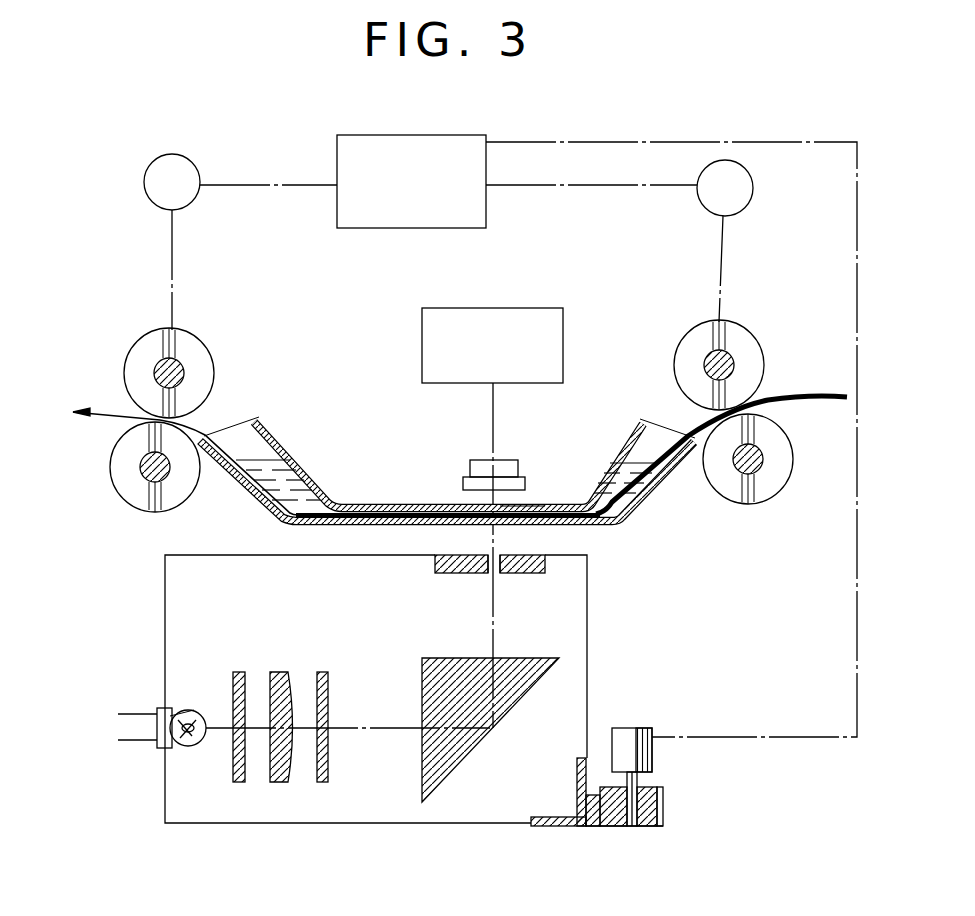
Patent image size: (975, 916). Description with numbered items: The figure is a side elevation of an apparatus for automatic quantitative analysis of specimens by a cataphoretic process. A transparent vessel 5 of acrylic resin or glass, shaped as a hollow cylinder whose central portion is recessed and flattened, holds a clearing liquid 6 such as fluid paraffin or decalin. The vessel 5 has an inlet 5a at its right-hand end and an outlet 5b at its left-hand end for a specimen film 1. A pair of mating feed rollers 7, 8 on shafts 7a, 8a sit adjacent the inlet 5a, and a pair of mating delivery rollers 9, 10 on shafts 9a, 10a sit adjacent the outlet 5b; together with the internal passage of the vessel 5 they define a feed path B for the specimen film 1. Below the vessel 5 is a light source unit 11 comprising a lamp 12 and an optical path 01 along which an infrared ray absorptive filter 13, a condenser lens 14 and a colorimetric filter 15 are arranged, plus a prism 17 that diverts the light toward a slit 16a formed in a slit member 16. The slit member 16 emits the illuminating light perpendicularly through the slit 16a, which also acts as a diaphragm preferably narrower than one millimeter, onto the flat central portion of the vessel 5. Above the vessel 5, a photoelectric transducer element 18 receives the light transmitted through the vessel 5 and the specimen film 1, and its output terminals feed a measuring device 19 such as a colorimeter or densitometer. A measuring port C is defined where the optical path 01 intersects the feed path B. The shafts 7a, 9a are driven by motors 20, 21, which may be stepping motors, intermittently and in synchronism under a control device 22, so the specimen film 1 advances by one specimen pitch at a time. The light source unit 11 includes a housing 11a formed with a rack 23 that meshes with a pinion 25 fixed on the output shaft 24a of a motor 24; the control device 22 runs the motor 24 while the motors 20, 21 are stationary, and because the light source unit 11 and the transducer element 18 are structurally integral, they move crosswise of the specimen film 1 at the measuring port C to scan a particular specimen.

The specimen film 1 is at (778, 392).
The transparent vessel 5 is at (612, 527).
The inlet 5a is at (655, 432).
The outlet 5b is at (236, 460).
The clearing liquid 6 is at (625, 505).
The feed roller 7 is at (750, 342).
The shaft 7a is at (705, 360).
The feed roller 8 is at (775, 485).
The shaft 8a is at (735, 467).
The delivery roller 9 is at (143, 343).
The shaft 9a is at (182, 362).
The delivery roller 10 is at (128, 495).
The shaft 10a is at (170, 475).
The light source unit 11 is at (588, 697).
The housing 11a is at (545, 827).
The lamp 12 is at (186, 745).
The infrared ray absorptive filter 13 is at (237, 782).
The condenser lens 14 is at (287, 782).
The colorimetric filter 15 is at (323, 782).
The slit member 16 is at (525, 574).
The slit 16a is at (487, 575).
The prism 17 is at (440, 784).
The photoelectric transducer element 18 is at (482, 462).
The measuring device 19 is at (545, 308).
The motor 20 is at (744, 170).
The motor 21 is at (192, 163).
The control device 22 is at (480, 208).
The rack 23 is at (592, 827).
The motor 24 is at (646, 748).
The output shaft 24a is at (637, 782).
The pinion 25 is at (648, 827).
The feed path B is at (442, 504).
The measuring port C is at (530, 503).
The optical path 01 is at (210, 715).